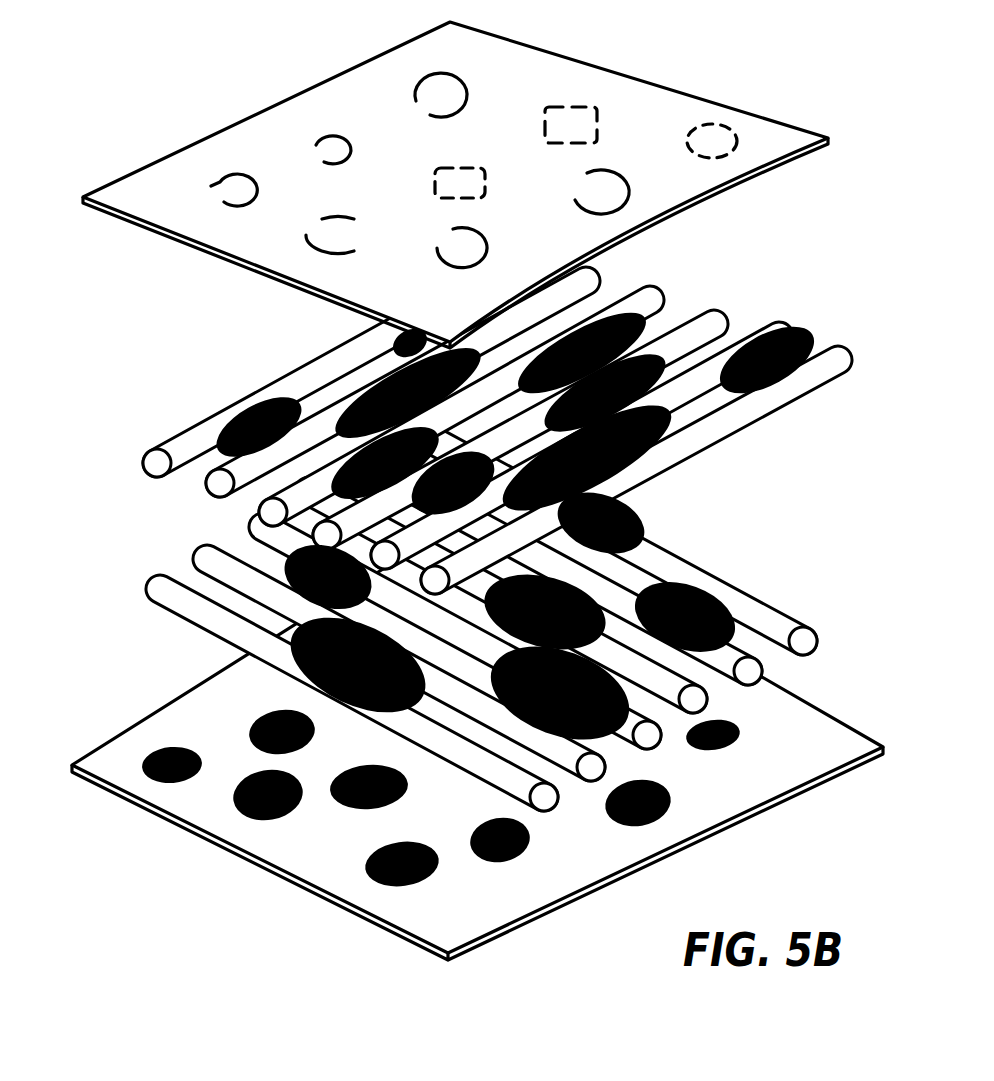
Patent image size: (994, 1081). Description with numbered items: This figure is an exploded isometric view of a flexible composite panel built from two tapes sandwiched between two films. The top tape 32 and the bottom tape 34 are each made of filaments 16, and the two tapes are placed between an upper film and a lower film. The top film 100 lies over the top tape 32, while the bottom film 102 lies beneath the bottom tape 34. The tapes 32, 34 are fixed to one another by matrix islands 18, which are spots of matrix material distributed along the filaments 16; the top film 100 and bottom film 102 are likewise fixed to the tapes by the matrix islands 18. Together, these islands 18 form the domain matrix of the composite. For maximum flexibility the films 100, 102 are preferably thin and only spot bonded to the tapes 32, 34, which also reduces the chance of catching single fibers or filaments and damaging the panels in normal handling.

The top film 100 is at (659, 95).
The bottom film 102 is at (693, 835).
The filament 16 is at (773, 603).
The matrix island 18 is at (246, 402).
The top tape 32 is at (757, 302).
The bottom tape 34 is at (830, 650).